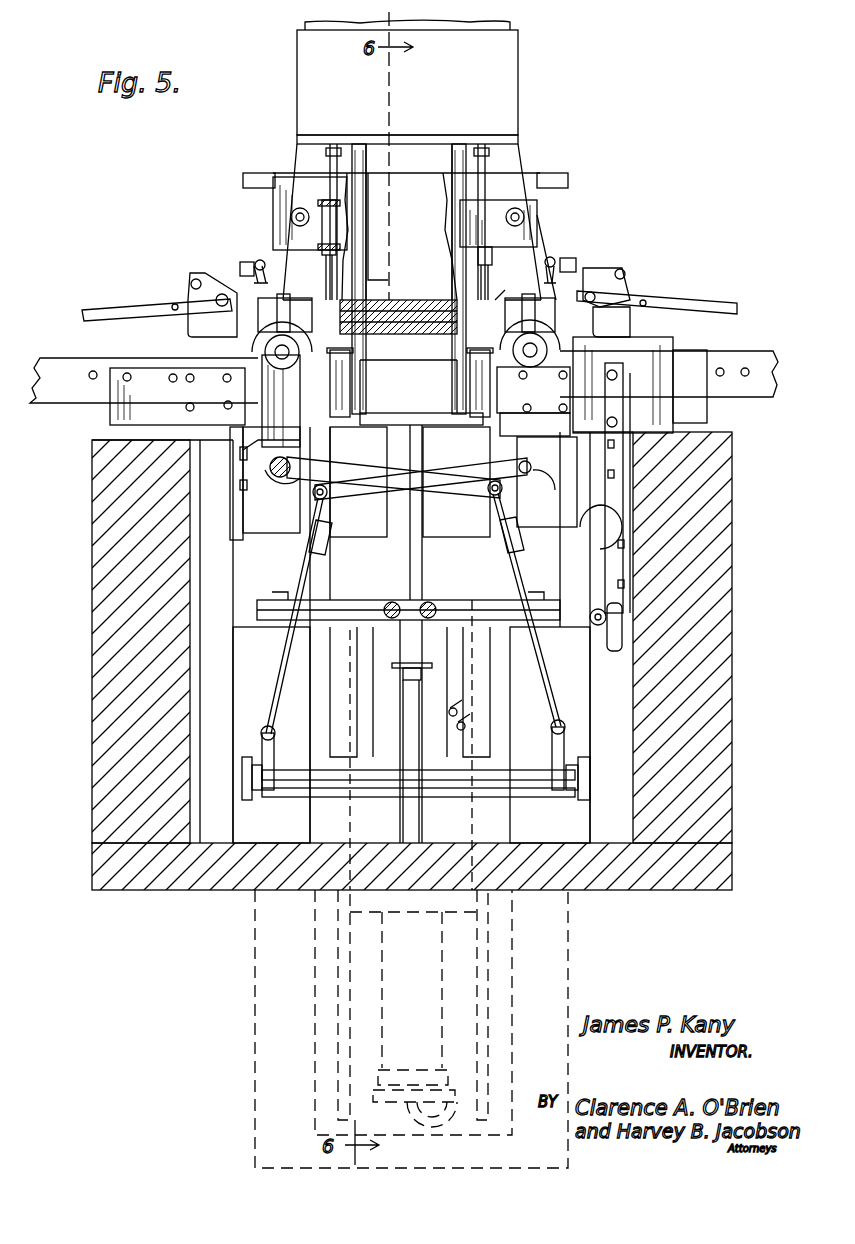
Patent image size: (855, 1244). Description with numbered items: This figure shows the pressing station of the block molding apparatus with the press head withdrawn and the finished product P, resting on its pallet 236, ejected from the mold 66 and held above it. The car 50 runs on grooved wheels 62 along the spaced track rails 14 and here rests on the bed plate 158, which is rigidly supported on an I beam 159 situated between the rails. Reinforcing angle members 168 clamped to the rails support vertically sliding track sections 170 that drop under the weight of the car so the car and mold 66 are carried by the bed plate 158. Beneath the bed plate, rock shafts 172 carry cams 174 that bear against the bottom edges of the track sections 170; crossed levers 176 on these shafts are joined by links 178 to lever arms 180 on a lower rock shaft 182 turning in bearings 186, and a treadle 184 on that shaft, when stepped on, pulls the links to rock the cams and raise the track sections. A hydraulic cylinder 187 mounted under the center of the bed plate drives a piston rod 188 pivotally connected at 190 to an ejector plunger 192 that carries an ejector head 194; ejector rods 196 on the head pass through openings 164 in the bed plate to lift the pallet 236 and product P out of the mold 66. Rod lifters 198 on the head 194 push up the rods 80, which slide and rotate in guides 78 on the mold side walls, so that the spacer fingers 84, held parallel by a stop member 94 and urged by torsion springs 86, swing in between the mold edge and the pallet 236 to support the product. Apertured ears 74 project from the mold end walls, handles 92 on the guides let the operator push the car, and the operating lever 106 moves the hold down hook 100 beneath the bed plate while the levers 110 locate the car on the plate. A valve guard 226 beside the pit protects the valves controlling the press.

The product P is at (508, 75).
The pallet 236 is at (435, 137).
The ears 74 is at (255, 180).
The spacer fingers 84 is at (330, 160).
The stop member 94 is at (366, 160).
The ejector rods 196 is at (368, 268).
The guides 78 is at (287, 235).
The handles 92 is at (291, 217).
The mold 66 is at (530, 228).
The torsion spring 86 is at (325, 255).
The levers 110 is at (242, 264).
The operating lever 106 is at (100, 310).
The hold down hook 100 is at (195, 325).
The bed plate 158 is at (620, 302).
The car 50 is at (496, 296).
The rods 80 is at (406, 313).
The openings 164 is at (365, 333).
The grooved wheels 62 is at (262, 347).
The rails 14 is at (55, 358).
The reinforcing angle members 168 is at (125, 400).
The valve guard 226 is at (675, 355).
The track sections 170 is at (268, 390).
The rod lifters 198 is at (350, 384).
The ejector head 194 is at (404, 418).
The I beam 159 is at (322, 553).
The rock shafts 172 is at (275, 480).
The cams 174 is at (290, 455).
The levers 176 is at (345, 470).
The ejector plunger 192 is at (422, 540).
The links 178 is at (302, 566).
The pivot connection 190 is at (422, 672).
The piston rod 188 is at (412, 718).
The rock shaft 182 is at (436, 770).
The treadle 184 is at (288, 797).
The lever arms 180 is at (262, 742).
The bearings 186 is at (242, 768).
The hydraulic cylinder 187 is at (411, 1029).